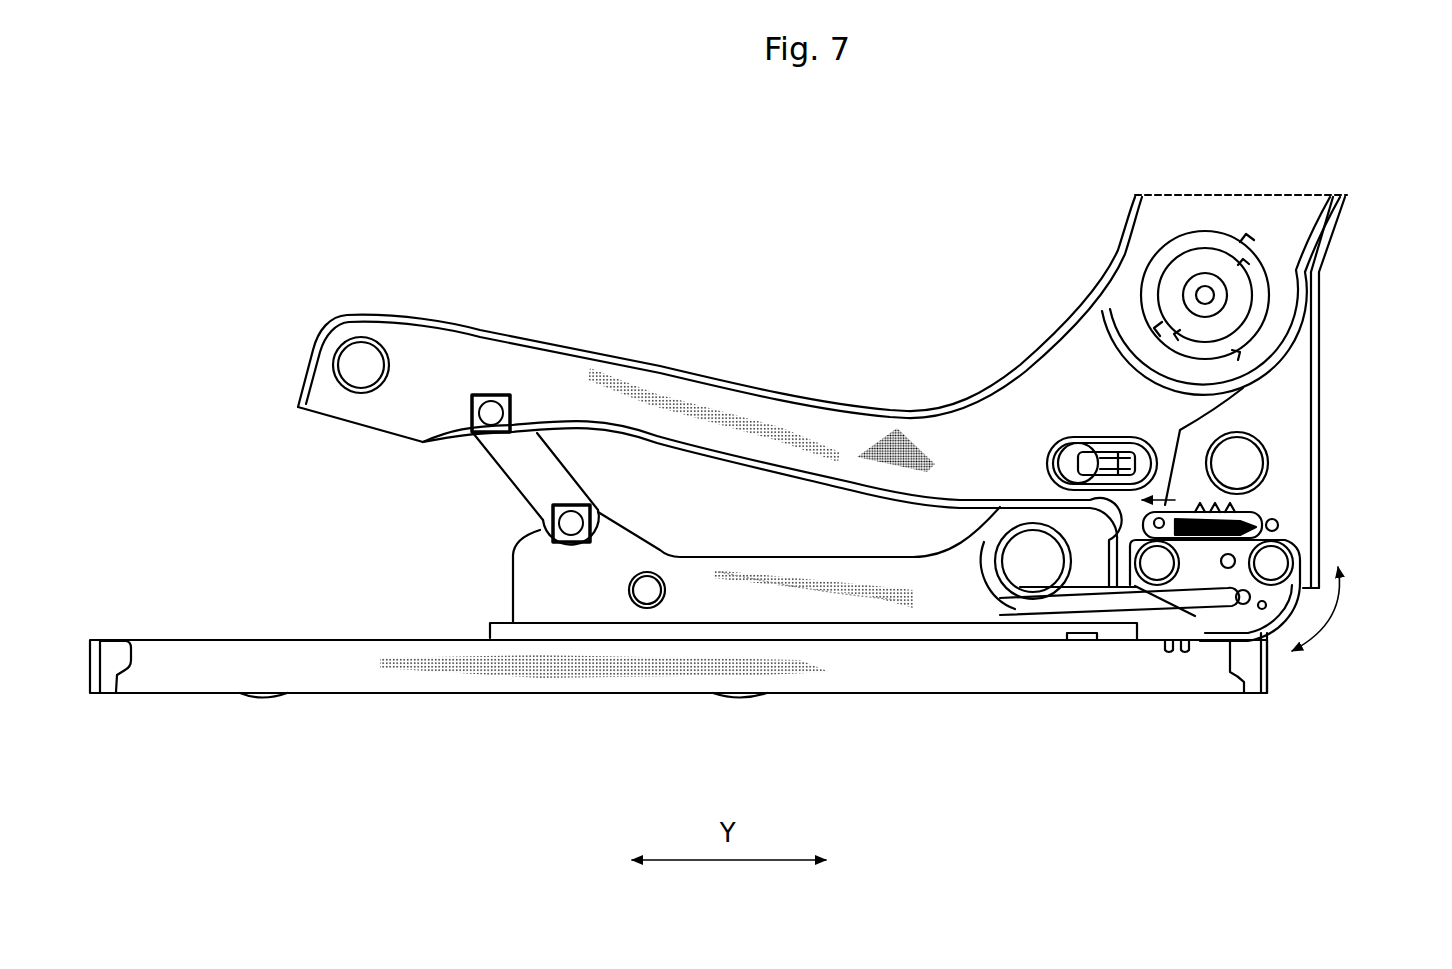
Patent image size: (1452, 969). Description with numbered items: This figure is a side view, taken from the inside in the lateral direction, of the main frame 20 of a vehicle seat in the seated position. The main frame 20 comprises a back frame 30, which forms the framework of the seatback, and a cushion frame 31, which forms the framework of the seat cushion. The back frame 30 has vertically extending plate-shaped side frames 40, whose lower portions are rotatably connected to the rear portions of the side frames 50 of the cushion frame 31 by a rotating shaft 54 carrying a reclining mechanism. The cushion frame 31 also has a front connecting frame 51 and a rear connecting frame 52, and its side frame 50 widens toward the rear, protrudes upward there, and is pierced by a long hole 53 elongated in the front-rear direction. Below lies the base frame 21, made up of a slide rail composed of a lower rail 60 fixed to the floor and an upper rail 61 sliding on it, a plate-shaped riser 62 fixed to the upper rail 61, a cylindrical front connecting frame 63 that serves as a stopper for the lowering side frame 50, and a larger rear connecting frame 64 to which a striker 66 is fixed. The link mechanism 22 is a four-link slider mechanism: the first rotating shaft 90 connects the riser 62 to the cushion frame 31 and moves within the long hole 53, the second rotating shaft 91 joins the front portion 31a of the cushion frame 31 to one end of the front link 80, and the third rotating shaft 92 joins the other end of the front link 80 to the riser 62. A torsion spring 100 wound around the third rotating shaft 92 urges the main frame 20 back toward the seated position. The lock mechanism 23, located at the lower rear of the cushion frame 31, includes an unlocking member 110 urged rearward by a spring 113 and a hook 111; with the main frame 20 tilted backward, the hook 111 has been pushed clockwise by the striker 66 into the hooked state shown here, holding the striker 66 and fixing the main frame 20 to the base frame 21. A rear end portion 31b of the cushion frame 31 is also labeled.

The main frame 20 is at (955, 396).
The base frame 21 is at (1174, 706).
The link mechanism 22 is at (434, 458).
The lock mechanism 23 is at (1305, 549).
The back frame 30 is at (1349, 212).
The cushion frame 31 is at (818, 387).
The front portion of the cushion frame 31a is at (437, 372).
The rear end of upper arm 31b is at (1182, 430).
The side frame 40 is at (1290, 252).
The side frame 50 is at (695, 368).
The front connecting frame 51 is at (358, 358).
The rear connecting frame 52 is at (1240, 447).
The long hole 53 is at (1108, 438).
The rotating shaft 54 is at (1192, 285).
The lower rail 60 is at (275, 655).
The upper rail 61 is at (863, 630).
The riser 62 is at (760, 597).
The front connecting frame 63 is at (646, 592).
The rear connecting frame 64 is at (1030, 568).
The striker 66 is at (1118, 602).
The front link 80 is at (517, 493).
The first rotating shaft 90 is at (1075, 460).
The second rotating shaft 91 is at (491, 408).
The third rotating shaft 92 is at (557, 523).
The torsion spring 100 is at (600, 505).
The unlocking member 110 is at (1180, 507).
The hook 111 is at (1250, 618).
The spring 113 is at (1218, 520).